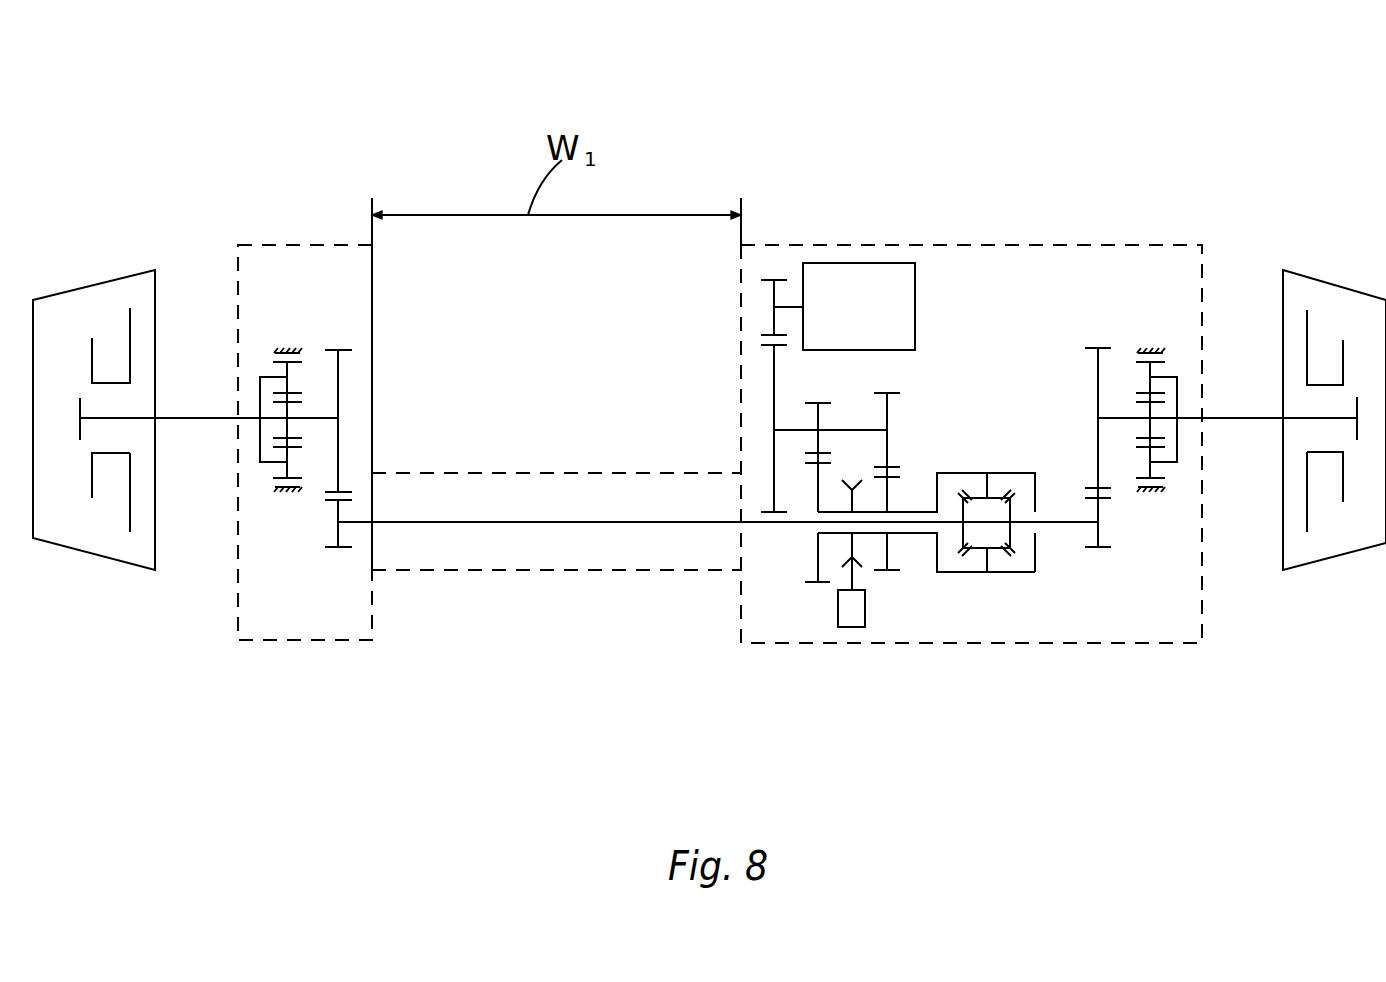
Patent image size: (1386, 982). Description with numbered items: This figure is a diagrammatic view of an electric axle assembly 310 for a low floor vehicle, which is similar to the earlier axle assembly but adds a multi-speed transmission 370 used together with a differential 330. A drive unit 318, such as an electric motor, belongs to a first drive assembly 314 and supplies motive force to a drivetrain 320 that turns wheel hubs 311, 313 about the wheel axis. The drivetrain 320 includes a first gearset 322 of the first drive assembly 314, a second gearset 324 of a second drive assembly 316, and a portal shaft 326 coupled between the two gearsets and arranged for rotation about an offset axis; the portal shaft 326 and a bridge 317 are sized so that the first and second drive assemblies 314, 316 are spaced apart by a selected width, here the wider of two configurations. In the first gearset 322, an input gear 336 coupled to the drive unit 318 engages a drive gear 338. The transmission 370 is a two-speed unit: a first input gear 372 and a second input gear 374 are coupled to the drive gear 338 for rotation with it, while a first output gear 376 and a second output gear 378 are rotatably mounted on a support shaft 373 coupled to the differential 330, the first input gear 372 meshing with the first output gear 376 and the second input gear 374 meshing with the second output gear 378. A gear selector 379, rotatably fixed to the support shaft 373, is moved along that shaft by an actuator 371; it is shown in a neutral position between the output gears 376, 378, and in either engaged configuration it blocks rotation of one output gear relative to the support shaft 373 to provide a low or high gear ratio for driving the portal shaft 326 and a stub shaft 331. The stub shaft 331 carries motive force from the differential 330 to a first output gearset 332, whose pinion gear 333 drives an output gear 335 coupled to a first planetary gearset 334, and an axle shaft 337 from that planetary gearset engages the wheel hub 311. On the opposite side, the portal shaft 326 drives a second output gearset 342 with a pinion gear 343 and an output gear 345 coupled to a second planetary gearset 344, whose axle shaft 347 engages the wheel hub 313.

The electric axle assembly 310 is at (1249, 140).
The wheel hub 311 is at (1355, 250).
The wheel hub 313 is at (100, 257).
The first drive assembly 314 is at (970, 208).
The second drive assembly 316 is at (338, 222).
The bridge 317 is at (525, 585).
The drive unit 318 is at (885, 285).
The drivetrain 320 is at (228, 588).
The first gearset 322 is at (1128, 610).
The second gearset 324 is at (297, 615).
The portal shaft 326 is at (477, 540).
The differential 330 is at (973, 582).
The stub shaft 331 is at (1060, 535).
The first output gearset 332 is at (1083, 318).
The pinion gear 333 is at (1103, 523).
The first planetary gearset 334 is at (1150, 318).
The output gear 335 is at (1060, 343).
The input gear 336 is at (773, 275).
The axle shaft 337 is at (1250, 405).
The drive gear 338 is at (765, 348).
The second output gearset 342 is at (345, 340).
The pinion gear 343 is at (368, 557).
The second planetary gearset 344 is at (287, 348).
The output gear 345 is at (330, 490).
The axle shaft 347 is at (195, 405).
The multi-speed transmission 370 is at (760, 428).
The actuator 371 is at (850, 630).
The first input gear 372 is at (825, 398).
The support shaft 373 is at (917, 507).
The second input gear 374 is at (897, 398).
The first output gear 376 is at (820, 585).
The second output gear 378 is at (910, 570).
The gear selector 379 is at (860, 565).